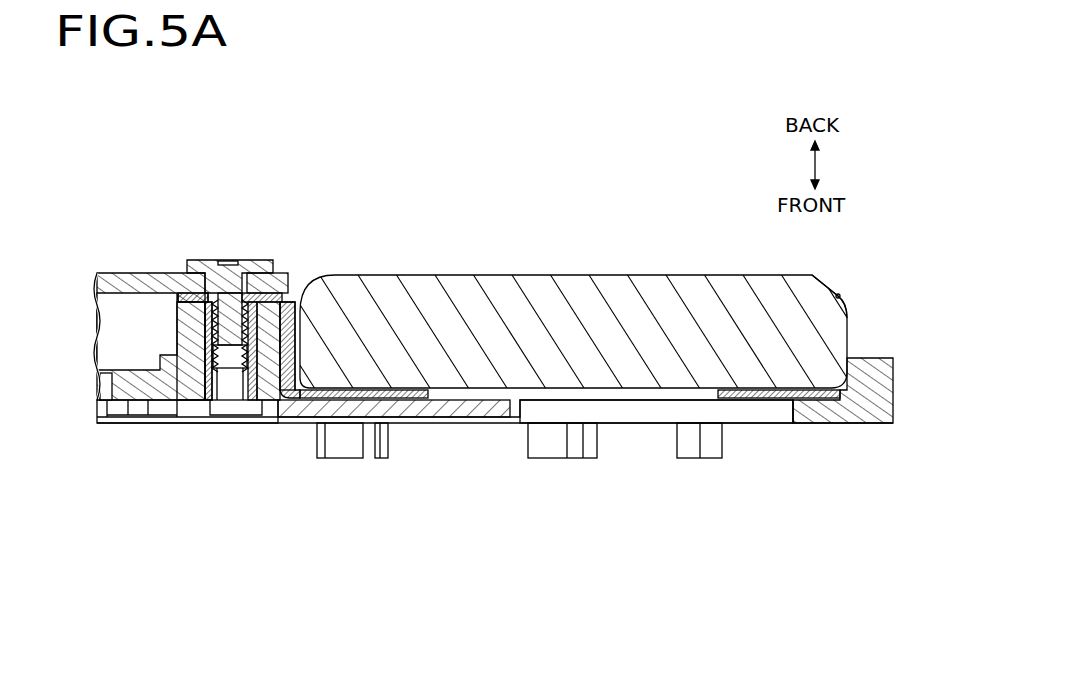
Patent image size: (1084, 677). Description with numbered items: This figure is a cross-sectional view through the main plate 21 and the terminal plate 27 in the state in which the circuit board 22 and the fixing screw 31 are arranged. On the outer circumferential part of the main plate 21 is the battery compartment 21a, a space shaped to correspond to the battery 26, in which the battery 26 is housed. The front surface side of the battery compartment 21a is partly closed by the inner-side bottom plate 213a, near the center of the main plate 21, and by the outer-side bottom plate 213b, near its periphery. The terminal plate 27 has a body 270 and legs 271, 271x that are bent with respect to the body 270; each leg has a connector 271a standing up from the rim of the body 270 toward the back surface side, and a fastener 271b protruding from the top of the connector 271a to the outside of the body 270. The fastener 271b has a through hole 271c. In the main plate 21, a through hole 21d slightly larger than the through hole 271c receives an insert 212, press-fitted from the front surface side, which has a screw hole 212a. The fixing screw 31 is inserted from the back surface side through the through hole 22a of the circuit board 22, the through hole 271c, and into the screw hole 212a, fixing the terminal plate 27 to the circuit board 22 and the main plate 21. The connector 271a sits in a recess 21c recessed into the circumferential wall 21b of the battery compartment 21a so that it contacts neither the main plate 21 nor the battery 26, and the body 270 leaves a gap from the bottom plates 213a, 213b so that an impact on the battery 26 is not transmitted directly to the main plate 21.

The main plate 21 is at (520, 423).
The battery compartment 21a is at (852, 276).
The circumferential wall 21b is at (285, 420).
The recess 21c is at (268, 375).
The through hole 21d is at (200, 385).
The circuit board 22 is at (130, 272).
The through hole 22a is at (210, 288).
The battery 26 is at (623, 310).
The terminal plate 27 is at (400, 410).
The fixing screw 31 is at (250, 262).
The insert 212 is at (225, 395).
The screw hole 212a is at (212, 392).
The inner-side bottom plate 213a is at (468, 420).
The outer-side bottom plate 213b is at (845, 412).
The body 270 is at (745, 398).
The leg 271 is at (357, 272).
The leg 271x is at (435, 185).
The connector 271a is at (300, 335).
The fastener 271b is at (278, 294).
The through hole 271c is at (206, 297).